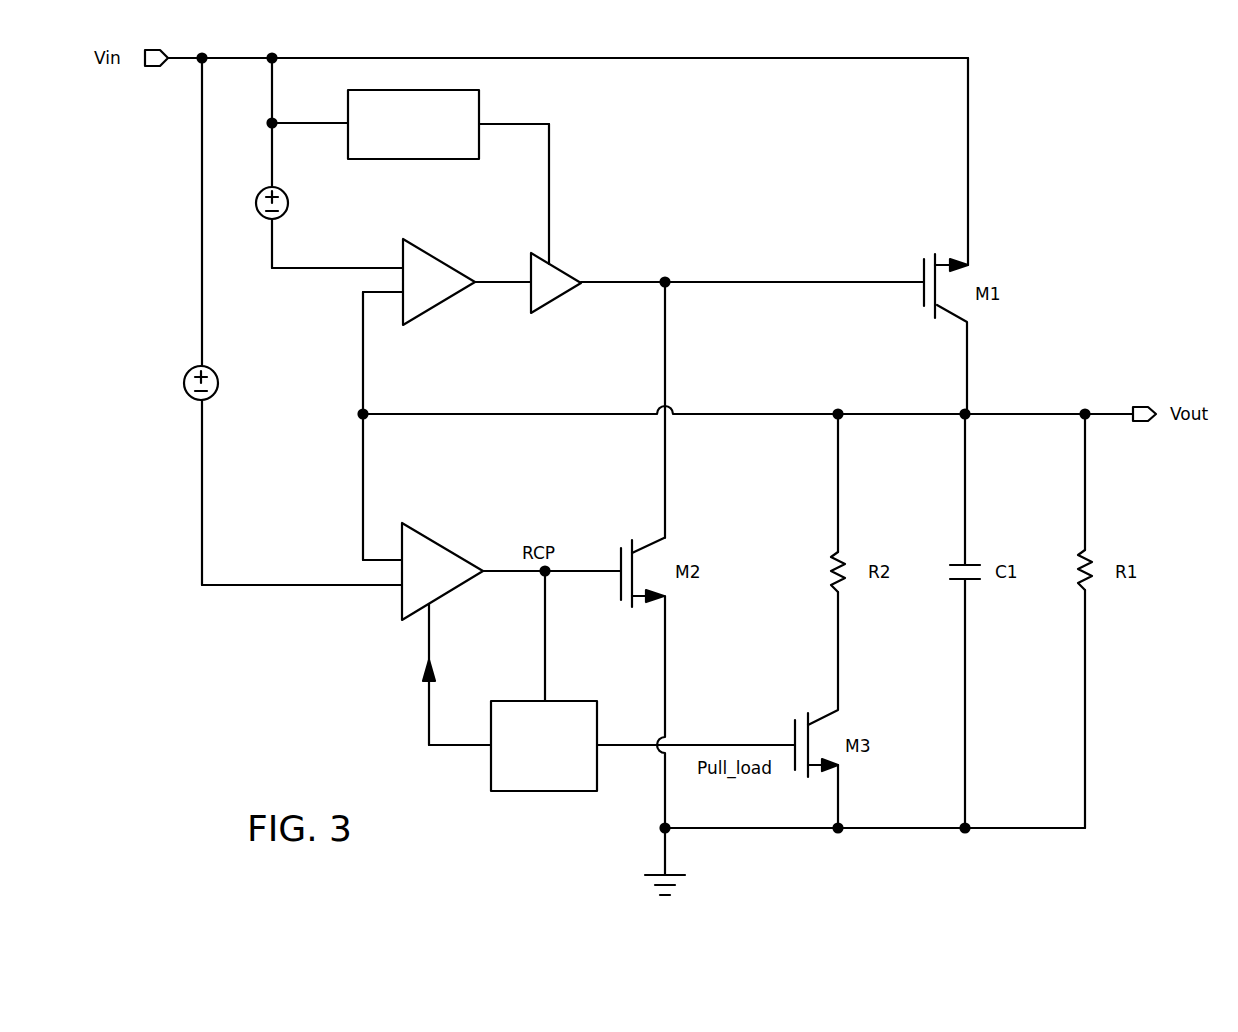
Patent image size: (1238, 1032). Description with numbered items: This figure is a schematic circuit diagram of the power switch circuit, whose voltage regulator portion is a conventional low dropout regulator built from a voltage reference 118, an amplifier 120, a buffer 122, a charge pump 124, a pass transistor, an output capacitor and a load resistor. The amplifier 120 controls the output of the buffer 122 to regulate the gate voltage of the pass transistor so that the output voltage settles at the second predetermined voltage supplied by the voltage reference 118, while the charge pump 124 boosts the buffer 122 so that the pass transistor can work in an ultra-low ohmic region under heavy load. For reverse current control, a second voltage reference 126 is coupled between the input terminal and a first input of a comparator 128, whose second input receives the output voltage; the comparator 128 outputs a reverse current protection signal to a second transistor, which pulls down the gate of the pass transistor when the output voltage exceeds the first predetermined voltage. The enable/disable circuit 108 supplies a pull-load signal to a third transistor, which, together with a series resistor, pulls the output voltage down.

The enable/disable circuit 108 is at (570, 700).
The voltage reference 118 is at (288, 207).
The amplifier 120 is at (440, 250).
The buffer 122 is at (572, 268).
The charge pump 124 is at (480, 112).
The voltage reference 126 is at (219, 378).
The comparator 128 is at (440, 540).